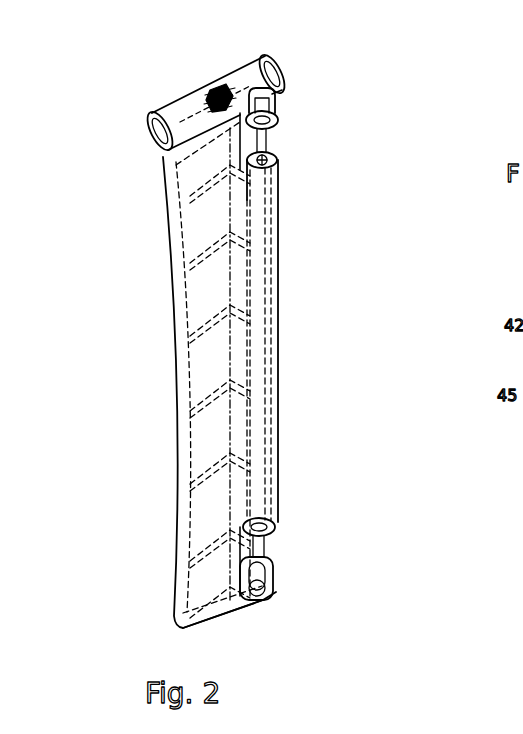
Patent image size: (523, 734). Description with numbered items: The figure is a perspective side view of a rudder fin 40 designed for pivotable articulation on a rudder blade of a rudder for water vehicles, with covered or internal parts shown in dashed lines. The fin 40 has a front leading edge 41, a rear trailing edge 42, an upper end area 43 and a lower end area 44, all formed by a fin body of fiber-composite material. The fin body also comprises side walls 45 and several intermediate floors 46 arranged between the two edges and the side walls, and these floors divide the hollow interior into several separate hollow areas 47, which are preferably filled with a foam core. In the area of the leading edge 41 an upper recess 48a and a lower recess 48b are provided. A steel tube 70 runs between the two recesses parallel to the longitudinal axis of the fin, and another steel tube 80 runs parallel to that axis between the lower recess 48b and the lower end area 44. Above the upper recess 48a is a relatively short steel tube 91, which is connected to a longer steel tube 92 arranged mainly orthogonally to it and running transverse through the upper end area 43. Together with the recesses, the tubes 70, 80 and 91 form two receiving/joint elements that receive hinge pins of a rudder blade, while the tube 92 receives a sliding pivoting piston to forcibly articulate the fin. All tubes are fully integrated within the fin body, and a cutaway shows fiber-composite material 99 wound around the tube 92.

The fin 40 is at (126, 406).
The front leading edge 41 is at (287, 340).
The rear trailing edge 42 is at (174, 355).
The upper end area 43 is at (221, 72).
The lower end area 44 is at (231, 620).
The side walls 45 is at (200, 438).
The intermediate floors 46 is at (247, 245).
The hollow areas 47 is at (217, 285).
The upper recess 48a is at (272, 142).
The lower recess 48b is at (266, 542).
The steel tube 70 is at (262, 417).
The steel tube 80 is at (267, 578).
The short steel tube 91 is at (280, 105).
The steel tube 92 is at (263, 57).
The fiber-composite material 99 is at (185, 100).